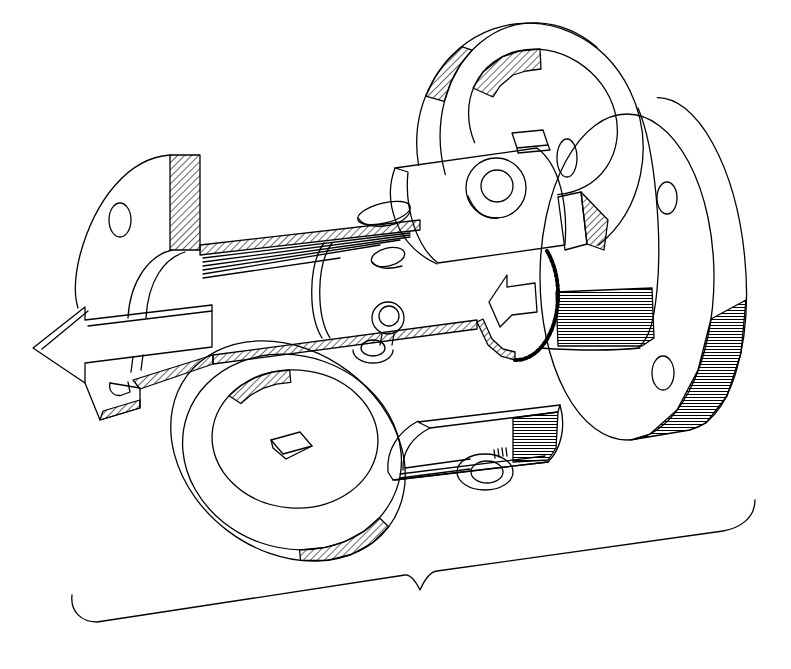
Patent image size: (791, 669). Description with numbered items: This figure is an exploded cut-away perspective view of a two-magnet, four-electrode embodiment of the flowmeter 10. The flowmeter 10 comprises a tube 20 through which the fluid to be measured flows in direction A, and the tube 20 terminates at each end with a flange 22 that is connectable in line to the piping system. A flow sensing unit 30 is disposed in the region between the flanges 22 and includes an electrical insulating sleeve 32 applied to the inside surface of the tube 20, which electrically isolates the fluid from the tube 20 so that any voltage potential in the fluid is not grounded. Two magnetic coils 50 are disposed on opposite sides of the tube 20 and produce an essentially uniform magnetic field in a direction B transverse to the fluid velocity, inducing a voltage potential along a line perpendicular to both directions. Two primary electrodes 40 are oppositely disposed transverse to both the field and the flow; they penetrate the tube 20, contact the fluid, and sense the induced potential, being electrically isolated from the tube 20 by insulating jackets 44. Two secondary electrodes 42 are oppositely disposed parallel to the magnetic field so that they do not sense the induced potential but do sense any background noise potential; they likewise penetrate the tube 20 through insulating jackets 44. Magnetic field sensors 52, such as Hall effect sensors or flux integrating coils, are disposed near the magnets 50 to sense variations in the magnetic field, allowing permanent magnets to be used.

The flowmeter 10 is at (288, 68).
The tube 20 is at (220, 240).
The flange 22 is at (142, 173).
The flow sensing unit 30 is at (560, 447).
The electrical insulating sleeve 32 is at (395, 190).
The primary electrode 40 is at (392, 267).
The secondary electrode 42 is at (502, 187).
The insulating jacket 44 is at (488, 212).
The magnetic coil 50 is at (458, 63).
The magnetic field sensor 52 is at (530, 135).